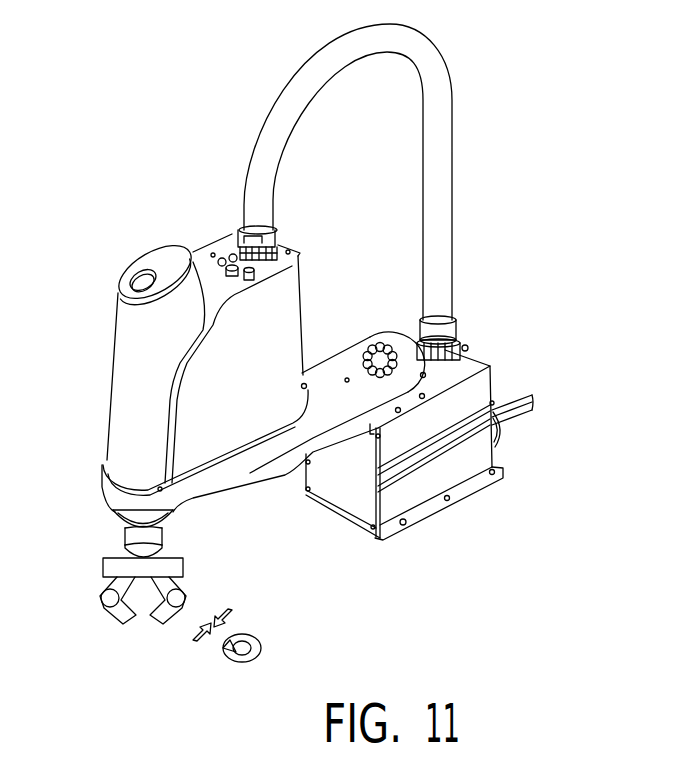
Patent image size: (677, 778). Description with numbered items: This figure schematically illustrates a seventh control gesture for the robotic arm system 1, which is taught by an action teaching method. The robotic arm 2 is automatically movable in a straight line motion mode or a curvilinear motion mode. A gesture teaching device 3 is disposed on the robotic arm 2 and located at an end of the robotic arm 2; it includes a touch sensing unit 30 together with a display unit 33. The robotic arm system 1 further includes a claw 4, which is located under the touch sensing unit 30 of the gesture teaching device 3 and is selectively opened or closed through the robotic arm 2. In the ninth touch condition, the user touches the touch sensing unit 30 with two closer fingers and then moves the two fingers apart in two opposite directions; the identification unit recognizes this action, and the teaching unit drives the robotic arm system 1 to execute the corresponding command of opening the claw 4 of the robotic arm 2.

The robotic arm system 1 is at (497, 195).
The robotic arm 2 is at (117, 407).
The gesture teaching device 3 is at (155, 534).
The display unit 33 is at (125, 538).
The touch sensing unit 30 is at (124, 549).
The claw 4 is at (108, 567).